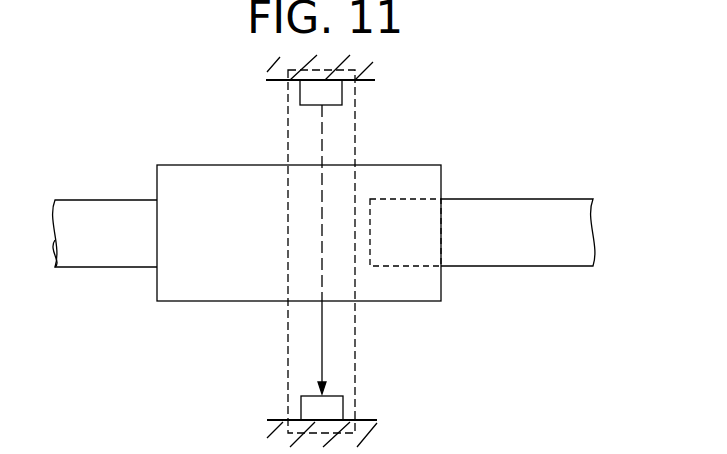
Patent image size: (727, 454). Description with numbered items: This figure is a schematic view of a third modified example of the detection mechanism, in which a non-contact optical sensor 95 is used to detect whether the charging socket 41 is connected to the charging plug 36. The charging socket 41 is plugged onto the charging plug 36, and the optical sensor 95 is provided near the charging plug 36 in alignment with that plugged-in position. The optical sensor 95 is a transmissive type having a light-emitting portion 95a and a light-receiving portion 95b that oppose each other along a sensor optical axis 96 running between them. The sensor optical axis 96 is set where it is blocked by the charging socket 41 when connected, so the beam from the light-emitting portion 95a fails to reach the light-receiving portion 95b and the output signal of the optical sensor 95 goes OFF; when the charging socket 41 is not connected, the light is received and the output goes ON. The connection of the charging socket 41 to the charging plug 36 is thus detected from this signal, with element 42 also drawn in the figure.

The charging plug 36 is at (522, 267).
The charging socket 41 is at (230, 165).
The input shaft 42 is at (107, 200).
The optical sensor 95 is at (355, 337).
The light-emitting portion 95a is at (342, 93).
The light-receiving portion 95b is at (343, 403).
The sensor optical axis 96 is at (322, 352).